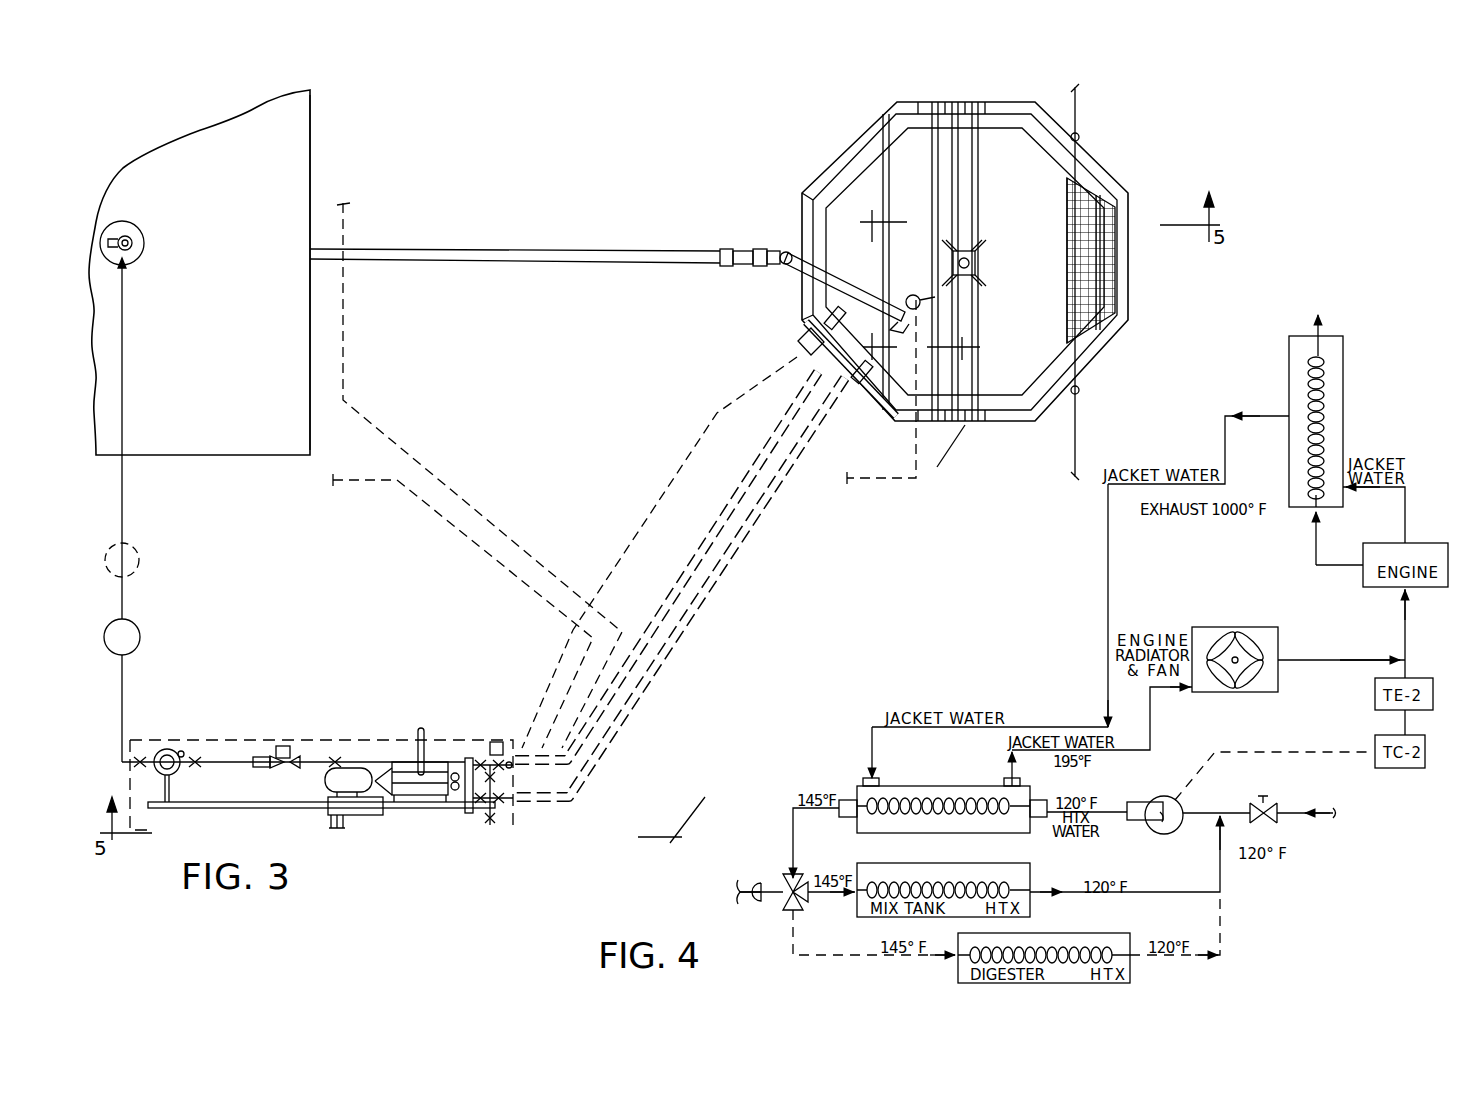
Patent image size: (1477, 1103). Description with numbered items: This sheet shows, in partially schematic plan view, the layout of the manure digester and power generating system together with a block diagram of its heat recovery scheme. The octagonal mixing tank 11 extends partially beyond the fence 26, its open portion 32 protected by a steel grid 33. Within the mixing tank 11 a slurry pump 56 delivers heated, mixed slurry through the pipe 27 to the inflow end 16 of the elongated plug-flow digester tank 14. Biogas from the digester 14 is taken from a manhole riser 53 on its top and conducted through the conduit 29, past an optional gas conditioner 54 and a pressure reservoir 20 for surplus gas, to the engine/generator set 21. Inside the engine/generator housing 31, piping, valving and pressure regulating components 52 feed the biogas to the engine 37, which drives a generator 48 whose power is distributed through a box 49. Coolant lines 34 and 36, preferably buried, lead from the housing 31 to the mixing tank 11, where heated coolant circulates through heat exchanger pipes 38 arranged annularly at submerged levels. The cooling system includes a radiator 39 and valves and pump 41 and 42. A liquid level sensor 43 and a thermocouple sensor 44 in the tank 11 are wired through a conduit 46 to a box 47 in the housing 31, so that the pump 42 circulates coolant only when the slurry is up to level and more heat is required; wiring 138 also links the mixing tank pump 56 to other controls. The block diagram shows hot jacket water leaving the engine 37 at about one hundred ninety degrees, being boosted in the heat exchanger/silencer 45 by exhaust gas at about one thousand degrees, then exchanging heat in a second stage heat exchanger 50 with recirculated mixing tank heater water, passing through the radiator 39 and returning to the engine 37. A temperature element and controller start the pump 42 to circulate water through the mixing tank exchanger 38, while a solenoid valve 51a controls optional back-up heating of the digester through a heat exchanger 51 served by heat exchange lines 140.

In FIG. 3, the mixing tank 11 is at (848, 133).
In FIG. 3, the digester tank 14 is at (322, 120).
In FIG. 3, the inflow end 16 is at (313, 165).
In FIG. 3, the pressure reservoir 20 is at (140, 551).
In FIG. 3, the engine/generator set 21 is at (400, 836).
In FIG. 3, the fence 26 is at (1077, 410).
In FIG. 3, the pipe 27 is at (447, 248).
In FIG. 3, the conduit 29 is at (126, 408).
In FIG. 3, the engine/generator housing 31 is at (368, 737).
In FIG. 3, the open portion 32 is at (1102, 201).
In FIG. 3, the steel grid 33 is at (1100, 312).
In FIG. 3, the coolant line 34 is at (752, 533).
In FIG. 3, the coolant line 36 is at (735, 505).
In FIG. 3, the engine 37 is at (428, 792).
In FIG. 4, the engine 37 is at (1427, 543).
In FIG. 3, the heat exchanger pipes 38 is at (845, 185).
In FIG. 4, the heat exchanger pipes 38 is at (1012, 886).
In FIG. 3, the radiator 39 is at (468, 758).
In FIG. 4, the radiator 39 is at (1280, 652).
In FIG. 3, the valves 41 is at (497, 810).
In FIG. 3, the pump 42 is at (512, 764).
In FIG. 4, the pump 42 is at (1156, 808).
In FIG. 3, the liquid level sensor 43 is at (843, 339).
In FIG. 3, the thermocouple sensor 44 is at (835, 318).
In FIG. 4, the heat exchanger/silencer 45 is at (1345, 432).
In FIG. 3, the conduit 46 is at (710, 428).
In FIG. 3, the box 47 is at (497, 742).
In FIG. 3, the generator 48 is at (325, 782).
In FIG. 3, the box 49 is at (360, 814).
In FIG. 4, the second stage heat exchanger 50 is at (933, 786).
In FIG. 4, the heat exchanger 51 is at (1072, 947).
In FIG. 4, the solenoid valve 51a is at (786, 880).
In FIG. 3, the piping, valving and pressure regulating components 52 is at (233, 758).
In FIG. 3, the manhole riser 53 is at (145, 236).
In FIG. 3, the gas conditioner 54 is at (142, 638).
In FIG. 3, the slurry pump 56 is at (913, 294).
In FIG. 3, the wiring 138 is at (888, 483).
In FIG. 3, the heat exchange lines 140 is at (352, 337).